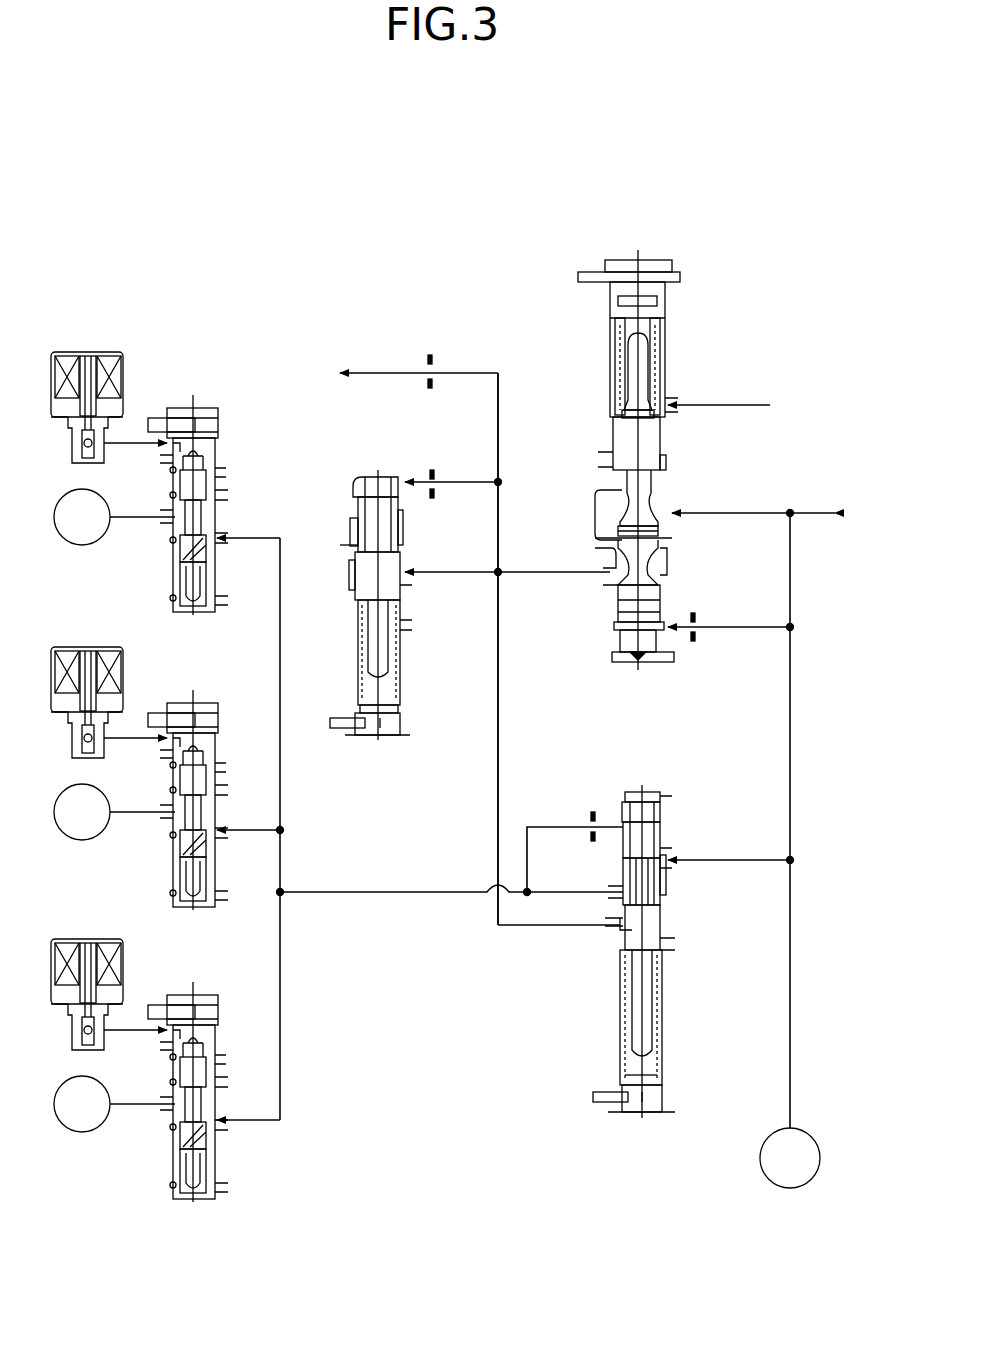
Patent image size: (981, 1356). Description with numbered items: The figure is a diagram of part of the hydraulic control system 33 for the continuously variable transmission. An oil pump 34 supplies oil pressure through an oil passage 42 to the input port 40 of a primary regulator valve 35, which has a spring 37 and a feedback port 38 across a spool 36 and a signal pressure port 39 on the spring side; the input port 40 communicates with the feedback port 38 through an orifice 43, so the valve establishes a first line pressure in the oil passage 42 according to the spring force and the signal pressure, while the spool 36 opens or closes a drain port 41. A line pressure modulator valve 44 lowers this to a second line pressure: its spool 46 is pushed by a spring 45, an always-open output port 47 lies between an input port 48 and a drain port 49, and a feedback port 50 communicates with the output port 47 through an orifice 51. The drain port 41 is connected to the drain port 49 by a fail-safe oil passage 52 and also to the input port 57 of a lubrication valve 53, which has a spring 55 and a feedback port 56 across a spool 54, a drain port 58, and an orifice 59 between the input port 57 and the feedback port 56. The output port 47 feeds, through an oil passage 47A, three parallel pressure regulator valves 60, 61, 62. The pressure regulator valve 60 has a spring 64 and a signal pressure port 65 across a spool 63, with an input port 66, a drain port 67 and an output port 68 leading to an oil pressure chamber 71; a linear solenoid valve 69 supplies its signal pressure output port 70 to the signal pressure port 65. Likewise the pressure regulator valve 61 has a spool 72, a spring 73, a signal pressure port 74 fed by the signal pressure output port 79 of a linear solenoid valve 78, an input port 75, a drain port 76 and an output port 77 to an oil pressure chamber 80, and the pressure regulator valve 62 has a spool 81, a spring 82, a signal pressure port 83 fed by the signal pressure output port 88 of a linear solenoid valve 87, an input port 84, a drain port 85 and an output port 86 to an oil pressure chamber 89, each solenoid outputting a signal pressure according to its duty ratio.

The hydraulic control system 33 is at (380, 242).
The oil pump 34 is at (762, 1168).
The primary regulator valve 35 is at (760, 276).
The spool 36 is at (613, 440).
The spring 37 is at (660, 336).
The feedback port 38 is at (672, 640).
The signal pressure port 39 is at (672, 398).
The input port 40 is at (660, 495).
The drain port 41 is at (600, 568).
The oil passage 42 is at (792, 592).
The orifice 43 is at (700, 614).
The line pressure modulator valve 44 is at (595, 1016).
The spring 45 is at (662, 1005).
The spool 46 is at (650, 935).
The output port 47 is at (615, 886).
The oil passage 47A is at (338, 892).
The input port 48 is at (668, 852).
The drain port 49 is at (620, 928).
The feedback port 50 is at (620, 822).
The orifice 51 is at (588, 815).
The oil passage 52 is at (500, 718).
The lubrication valve 53 is at (358, 453).
The spool 54 is at (385, 590).
The spring 55 is at (400, 696).
The feedback port 56 is at (398, 482).
The input port 57 is at (403, 560).
The drain port 58 is at (352, 518).
The orifice 59 is at (440, 478).
The pressure regulator valve 60 is at (226, 442).
The pressure regulator valve 61 is at (208, 797).
The pressure regulator valve 62 is at (208, 1089).
The spool 63 is at (210, 548).
The spring 64 is at (216, 598).
The signal pressure port 65 is at (170, 450).
The input port 66 is at (222, 538).
The drain port 67 is at (220, 497).
The output port 68 is at (172, 522).
The linear solenoid valve 69 is at (128, 356).
The signal pressure output port 70 is at (110, 440).
The oil pressure chamber 71 is at (80, 532).
The spool 72 is at (159, 855).
The spring 73 is at (221, 881).
The signal pressure port 74 is at (144, 761).
The input port 75 is at (243, 845).
The drain port 76 is at (232, 783).
The output port 77 is at (153, 826).
The linear solenoid valve 78 is at (106, 679).
The signal pressure output port 79 is at (139, 701).
The oil pressure chamber 80 is at (112, 833).
The spool 81 is at (157, 1147).
The spring 82 is at (221, 1173).
The signal pressure port 83 is at (144, 1053).
The input port 84 is at (243, 1137).
The drain port 85 is at (232, 1075).
The output port 86 is at (153, 1118).
The linear solenoid valve 87 is at (75, 971).
The signal pressure output port 88 is at (139, 993).
The oil pressure chamber 89 is at (112, 1125).